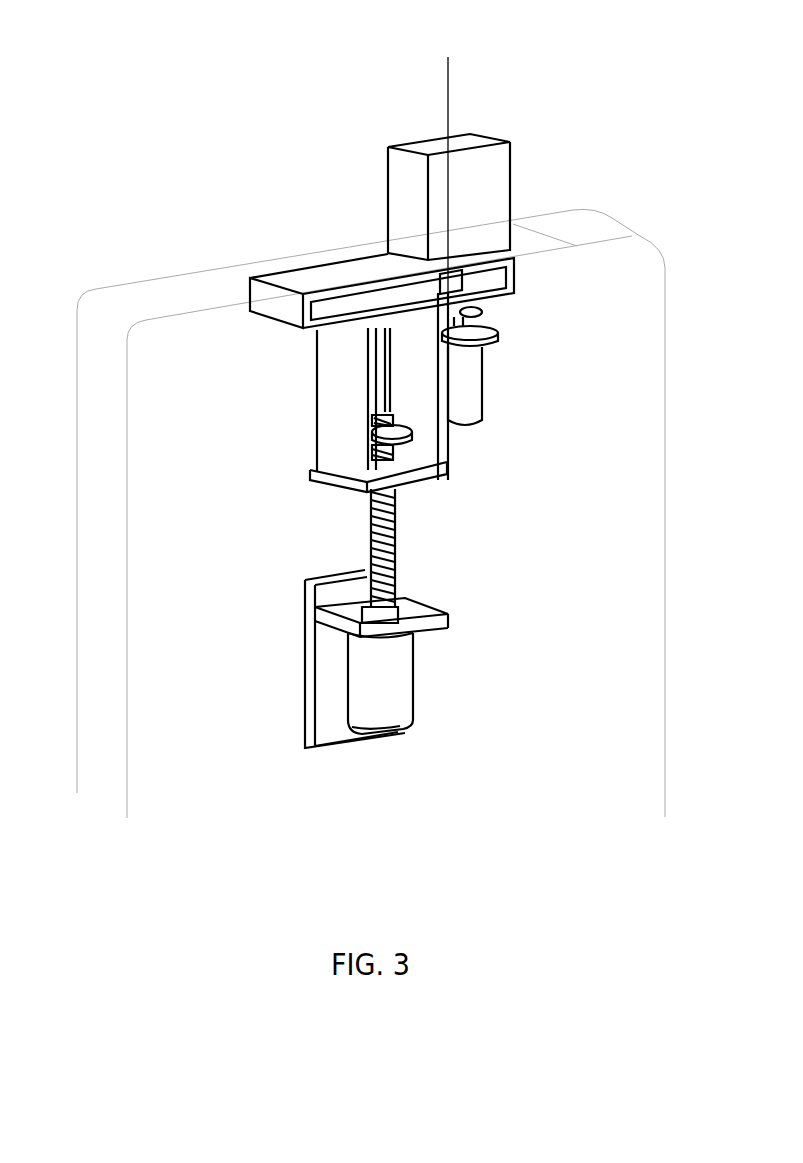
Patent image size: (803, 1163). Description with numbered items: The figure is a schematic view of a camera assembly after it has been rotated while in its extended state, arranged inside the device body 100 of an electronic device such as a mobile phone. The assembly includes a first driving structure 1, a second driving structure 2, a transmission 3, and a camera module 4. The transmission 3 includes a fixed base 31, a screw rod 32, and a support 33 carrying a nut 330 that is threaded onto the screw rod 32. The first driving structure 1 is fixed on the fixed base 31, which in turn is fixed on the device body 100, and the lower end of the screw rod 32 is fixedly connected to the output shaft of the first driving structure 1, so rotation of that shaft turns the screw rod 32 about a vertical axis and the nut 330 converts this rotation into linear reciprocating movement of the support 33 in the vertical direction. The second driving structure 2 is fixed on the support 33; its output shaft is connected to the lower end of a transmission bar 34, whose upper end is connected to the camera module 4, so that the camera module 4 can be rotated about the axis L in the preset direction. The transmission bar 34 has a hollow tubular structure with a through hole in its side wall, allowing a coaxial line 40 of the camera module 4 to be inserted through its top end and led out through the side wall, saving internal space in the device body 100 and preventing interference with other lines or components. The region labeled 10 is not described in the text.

The device body 100 is at (160, 292).
The mounting slot 10 is at (372, 257).
The camera module 4 is at (443, 145).
The axis L is at (449, 165).
The transmission 3 is at (266, 322).
The support 33 is at (342, 397).
The nut 330 is at (407, 474).
The screw rod 32 is at (392, 548).
The fixed base 31 is at (330, 672).
The first driving structure 1 is at (380, 680).
The second driving structure 2 is at (457, 383).
The transmission bar 34 is at (455, 322).
The coaxial line 40 is at (482, 312).